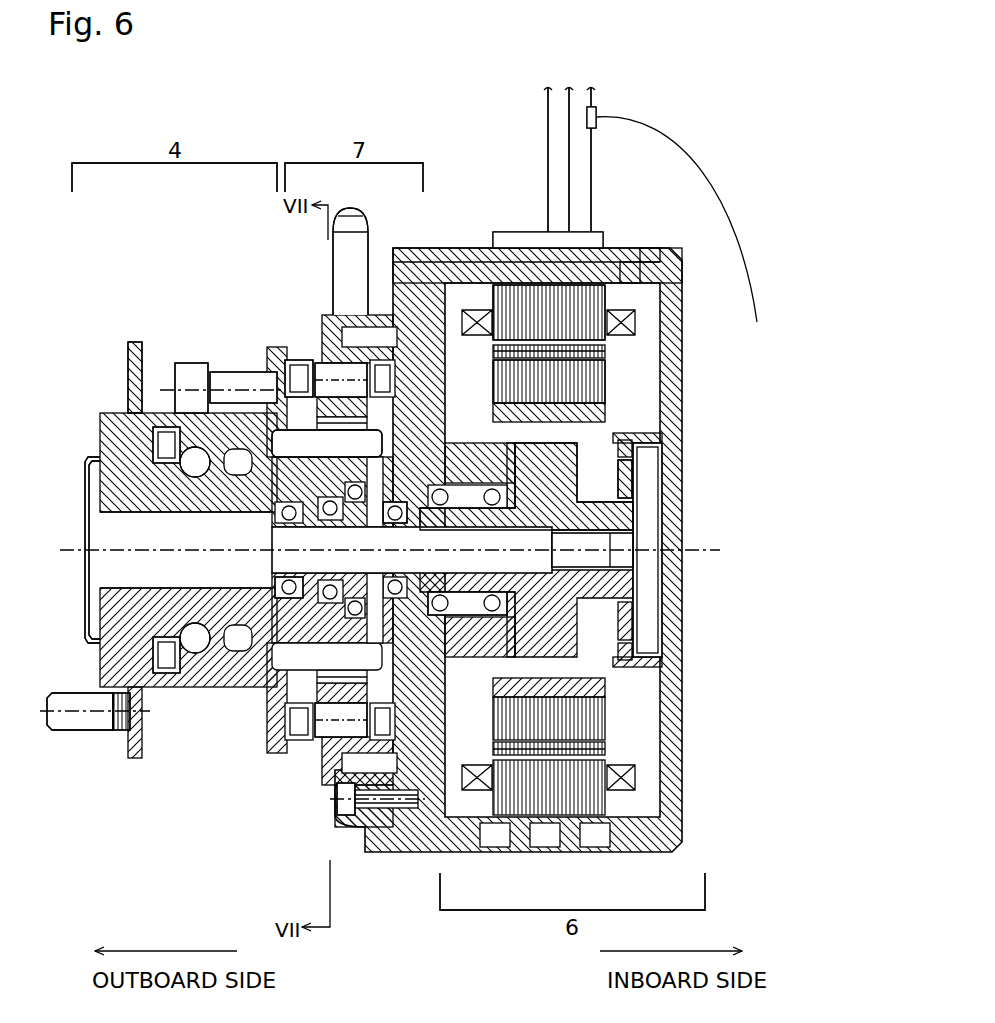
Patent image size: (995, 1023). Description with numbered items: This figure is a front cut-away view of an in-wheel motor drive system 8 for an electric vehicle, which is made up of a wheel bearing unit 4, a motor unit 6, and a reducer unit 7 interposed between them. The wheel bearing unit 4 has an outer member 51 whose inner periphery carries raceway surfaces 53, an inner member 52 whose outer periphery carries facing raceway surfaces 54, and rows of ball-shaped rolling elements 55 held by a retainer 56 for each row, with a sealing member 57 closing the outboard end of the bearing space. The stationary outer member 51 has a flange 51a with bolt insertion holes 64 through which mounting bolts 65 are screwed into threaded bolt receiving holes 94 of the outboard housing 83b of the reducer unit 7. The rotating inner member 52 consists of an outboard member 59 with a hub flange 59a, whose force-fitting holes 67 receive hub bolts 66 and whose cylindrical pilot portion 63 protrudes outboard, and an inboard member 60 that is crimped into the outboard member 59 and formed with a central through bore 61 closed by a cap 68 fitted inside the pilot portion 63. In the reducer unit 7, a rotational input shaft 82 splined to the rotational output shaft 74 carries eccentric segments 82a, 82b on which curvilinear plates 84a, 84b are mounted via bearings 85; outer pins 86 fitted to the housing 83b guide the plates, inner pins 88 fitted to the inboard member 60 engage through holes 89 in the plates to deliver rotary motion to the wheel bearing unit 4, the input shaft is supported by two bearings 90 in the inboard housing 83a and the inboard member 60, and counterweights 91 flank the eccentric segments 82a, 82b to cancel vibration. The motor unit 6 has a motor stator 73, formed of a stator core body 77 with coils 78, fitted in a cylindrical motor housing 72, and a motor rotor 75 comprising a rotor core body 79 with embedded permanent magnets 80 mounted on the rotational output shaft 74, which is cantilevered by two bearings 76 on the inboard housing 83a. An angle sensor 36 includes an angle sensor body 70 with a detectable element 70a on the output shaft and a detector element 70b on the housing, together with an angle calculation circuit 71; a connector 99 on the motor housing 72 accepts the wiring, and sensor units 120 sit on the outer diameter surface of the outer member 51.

The wheel bearing unit 4 is at (174, 165).
The motor unit 6 is at (572, 906).
The reducer unit 7 is at (354, 165).
The in-wheel motor drive system 8 is at (447, 108).
The angle sensor 36 is at (776, 325).
The outer member 51 is at (182, 415).
The flange 51a is at (200, 372).
The inner member 52 is at (45, 470).
The raceway surfaces 53 is at (208, 642).
The raceway surfaces 54 is at (200, 636).
The rolling elements 55 is at (192, 474).
The retainer 56 is at (130, 670).
The sealing member 57 is at (118, 642).
The outboard member 59 is at (133, 473).
The hub flange 59a is at (132, 342).
The inboard member 60 is at (145, 512).
The through bore 61 is at (85, 560).
The pilot portion 63 is at (95, 473).
The bolt insertion holes 64 is at (178, 425).
The mounting bolts 65 is at (188, 367).
The hub bolts 66 is at (77, 720).
The force-fitting holes 67 is at (123, 728).
The cap 68 is at (85, 585).
The angle sensor body 70 is at (740, 365).
The detectable element 70a is at (658, 458).
The detector element 70b is at (635, 480).
The angle calculation circuit 71 is at (682, 228).
The motor housing 72 is at (478, 248).
The motor stator 73 is at (689, 170).
The rotational output shaft 74 is at (623, 593).
The motor rotor 75 is at (491, 408).
The bearings 76 is at (436, 607).
The stator core body 77 is at (627, 248).
The coils 78 is at (648, 248).
The rotor core body 79 is at (508, 375).
The permanent magnets 80 is at (508, 355).
The rotational input shaft 82 is at (565, 585).
The eccentric segment 82a is at (357, 537).
The eccentric segment 82b is at (330, 572).
The inboard housing 83a is at (436, 248).
The outboard housing 83b is at (300, 440).
The curvilinear plate 84a is at (340, 745).
The curvilinear plate 84b is at (337, 727).
The bearings 85 is at (293, 640).
The outer pins 86 is at (342, 372).
The inner pins 88 is at (290, 372).
The through holes 89 is at (333, 375).
The bearings 90 is at (282, 600).
The counterweights 91 is at (300, 480).
The bolt receiving holes 94 is at (238, 372).
The connector 99 is at (520, 232).
The sensor units 120 is at (167, 430).